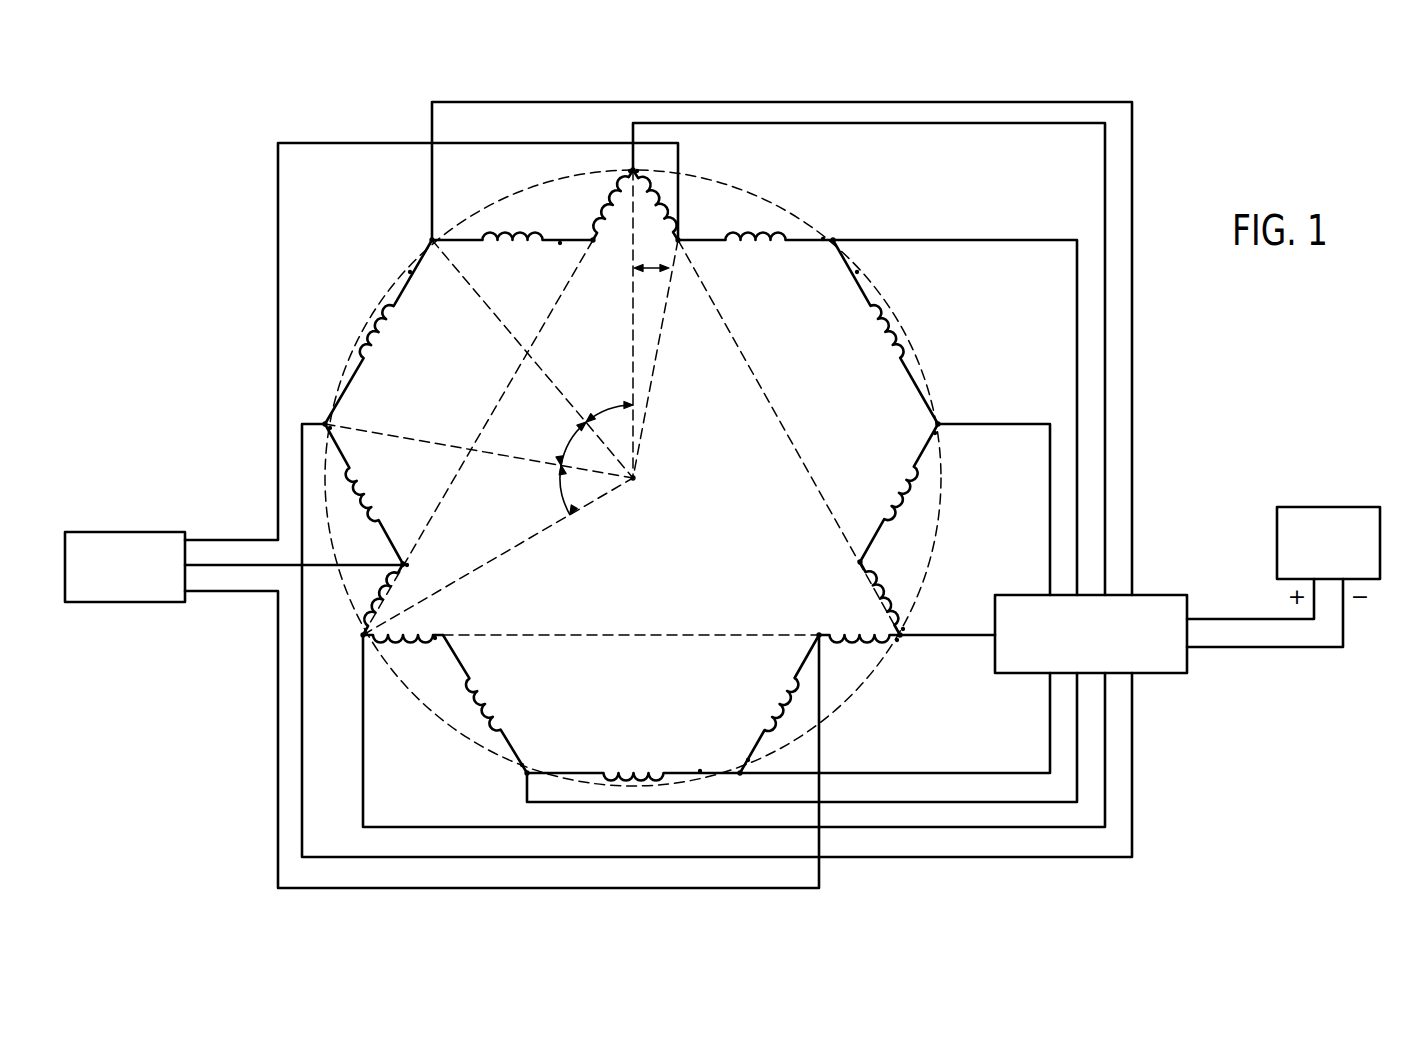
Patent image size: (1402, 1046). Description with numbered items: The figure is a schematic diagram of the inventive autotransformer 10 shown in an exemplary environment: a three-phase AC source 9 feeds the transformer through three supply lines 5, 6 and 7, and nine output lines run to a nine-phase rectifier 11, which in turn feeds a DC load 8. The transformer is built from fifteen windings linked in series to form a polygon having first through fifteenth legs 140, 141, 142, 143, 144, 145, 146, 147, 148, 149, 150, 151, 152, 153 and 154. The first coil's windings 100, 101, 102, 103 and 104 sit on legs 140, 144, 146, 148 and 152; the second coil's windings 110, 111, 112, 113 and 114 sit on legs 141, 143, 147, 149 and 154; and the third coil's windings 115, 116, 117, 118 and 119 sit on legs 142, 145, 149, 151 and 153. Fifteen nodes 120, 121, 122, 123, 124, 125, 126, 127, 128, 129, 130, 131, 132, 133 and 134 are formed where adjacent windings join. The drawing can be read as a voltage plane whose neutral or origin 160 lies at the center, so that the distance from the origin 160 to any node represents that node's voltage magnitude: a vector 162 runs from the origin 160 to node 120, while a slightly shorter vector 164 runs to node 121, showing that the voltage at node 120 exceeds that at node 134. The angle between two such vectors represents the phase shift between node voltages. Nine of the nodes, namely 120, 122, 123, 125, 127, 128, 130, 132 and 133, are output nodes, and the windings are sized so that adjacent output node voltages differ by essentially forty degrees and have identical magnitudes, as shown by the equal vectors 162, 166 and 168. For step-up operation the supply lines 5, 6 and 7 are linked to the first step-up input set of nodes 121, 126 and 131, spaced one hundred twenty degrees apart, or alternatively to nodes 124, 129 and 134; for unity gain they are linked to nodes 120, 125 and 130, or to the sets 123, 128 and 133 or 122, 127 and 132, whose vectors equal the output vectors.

The supply line 5 is at (278, 248).
The supply line 6 is at (222, 540).
The supply line 7 is at (278, 658).
The DC load 8 is at (1330, 506).
The 3-phase AC source 9 is at (150, 530).
The autotransformer 10 is at (643, 438).
The 9-phase rectifier 11 is at (1190, 600).
The first coil first winding 100 is at (748, 238).
The first coil second winding 101 is at (868, 645).
The first coil third winding 102 is at (617, 770).
The first coil fourth winding 103 is at (394, 642).
The first coil fifth winding 104 is at (506, 238).
The second coil first winding 110 is at (880, 330).
The second coil second winding 111 is at (896, 588).
The second coil third winding 112 is at (482, 700).
The second coil fourth winding 113 is at (368, 492).
The second coil fifth winding 114 is at (670, 222).
The third coil first winding 115 is at (905, 488).
The third coil second winding 116 is at (784, 697).
The third coil third winding 117 is at (372, 598).
The third coil fourth winding 118 is at (368, 328).
The third coil fifth winding 119 is at (602, 207).
The node 120 is at (632, 167).
The node 121 is at (682, 244).
The node 122 is at (838, 239).
The node 123 is at (942, 423).
The node 124 is at (857, 562).
The node 125 is at (904, 638).
The node 126 is at (818, 631).
The node 127 is at (738, 770).
The node 128 is at (524, 775).
The node 129 is at (445, 634).
The node 130 is at (362, 638).
The node 131 is at (404, 560).
The node 132 is at (325, 421).
The node 133 is at (430, 237).
The node 134 is at (595, 244).
The first leg 140 is at (823, 238).
The second leg 141 is at (858, 273).
The third leg 142 is at (936, 435).
The fourth leg 143 is at (905, 630).
The fifth leg 144 is at (897, 641).
The sixth leg 145 is at (748, 758).
The seventh leg 146 is at (700, 770).
The eighth leg 147 is at (521, 766).
The ninth leg 148 is at (434, 640).
The eleventh leg 149 is at (408, 566).
The leg 150 is at (331, 429).
The twelfth leg 151 is at (412, 272).
The thirteenth leg 152 is at (560, 244).
The fourteenth leg 153 is at (630, 170).
The fifteenth leg 154 is at (637, 170).
The origin 160 is at (637, 479).
The vector 162 is at (632, 320).
The vector 164 is at (660, 335).
The vector 166 is at (558, 392).
The vector 168 is at (432, 441).